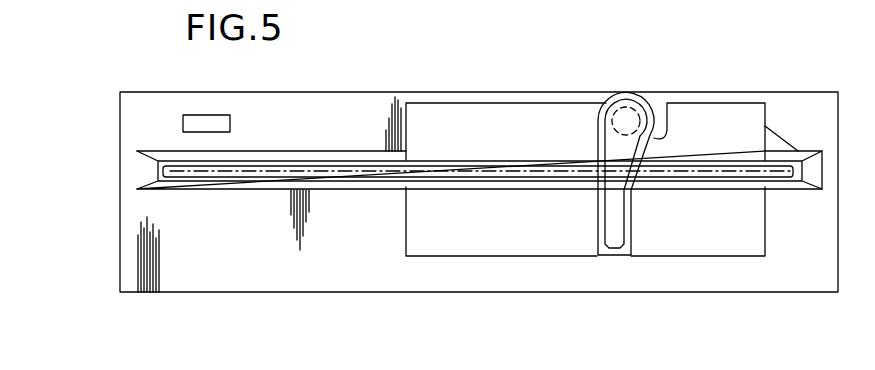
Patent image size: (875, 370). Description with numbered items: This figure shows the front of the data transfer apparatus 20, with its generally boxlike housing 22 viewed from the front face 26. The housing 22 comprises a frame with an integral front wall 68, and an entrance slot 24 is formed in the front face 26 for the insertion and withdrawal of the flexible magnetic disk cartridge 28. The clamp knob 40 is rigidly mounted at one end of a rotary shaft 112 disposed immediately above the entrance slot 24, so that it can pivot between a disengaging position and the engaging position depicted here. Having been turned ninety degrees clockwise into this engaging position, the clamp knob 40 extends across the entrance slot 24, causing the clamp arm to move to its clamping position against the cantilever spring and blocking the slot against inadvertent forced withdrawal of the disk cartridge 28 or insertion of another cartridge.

The data transfer apparatus 20 is at (112, 89).
The housing 22 is at (765, 92).
The entrance slot 24 is at (267, 163).
The front face 26 is at (343, 98).
The flexible magnetic disk cartridge 28 is at (454, 158).
The clamp knob 40 is at (604, 213).
The front wall 68 is at (128, 256).
The rotary shaft 112 is at (631, 106).